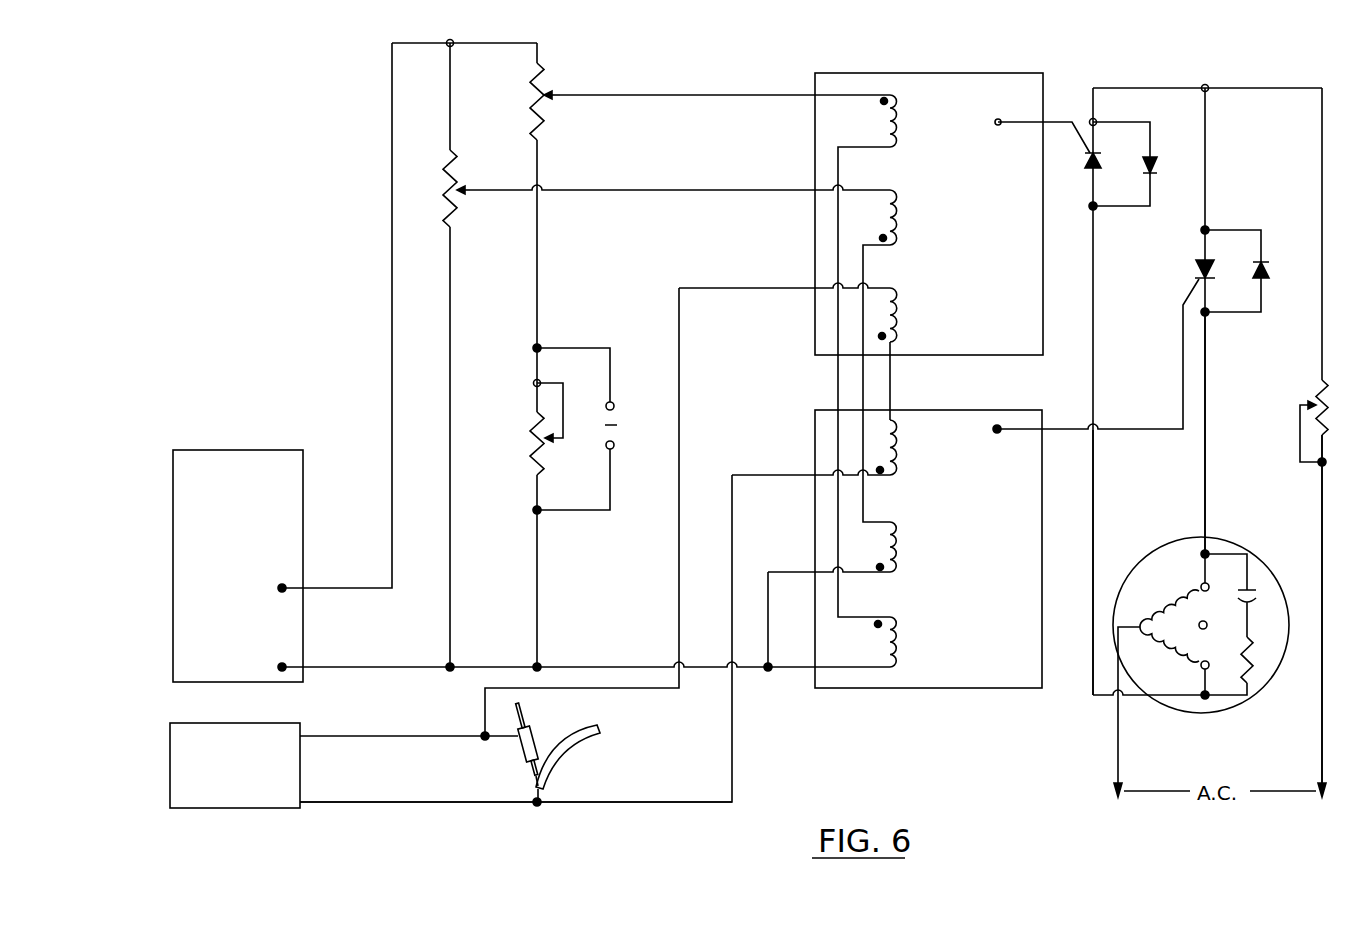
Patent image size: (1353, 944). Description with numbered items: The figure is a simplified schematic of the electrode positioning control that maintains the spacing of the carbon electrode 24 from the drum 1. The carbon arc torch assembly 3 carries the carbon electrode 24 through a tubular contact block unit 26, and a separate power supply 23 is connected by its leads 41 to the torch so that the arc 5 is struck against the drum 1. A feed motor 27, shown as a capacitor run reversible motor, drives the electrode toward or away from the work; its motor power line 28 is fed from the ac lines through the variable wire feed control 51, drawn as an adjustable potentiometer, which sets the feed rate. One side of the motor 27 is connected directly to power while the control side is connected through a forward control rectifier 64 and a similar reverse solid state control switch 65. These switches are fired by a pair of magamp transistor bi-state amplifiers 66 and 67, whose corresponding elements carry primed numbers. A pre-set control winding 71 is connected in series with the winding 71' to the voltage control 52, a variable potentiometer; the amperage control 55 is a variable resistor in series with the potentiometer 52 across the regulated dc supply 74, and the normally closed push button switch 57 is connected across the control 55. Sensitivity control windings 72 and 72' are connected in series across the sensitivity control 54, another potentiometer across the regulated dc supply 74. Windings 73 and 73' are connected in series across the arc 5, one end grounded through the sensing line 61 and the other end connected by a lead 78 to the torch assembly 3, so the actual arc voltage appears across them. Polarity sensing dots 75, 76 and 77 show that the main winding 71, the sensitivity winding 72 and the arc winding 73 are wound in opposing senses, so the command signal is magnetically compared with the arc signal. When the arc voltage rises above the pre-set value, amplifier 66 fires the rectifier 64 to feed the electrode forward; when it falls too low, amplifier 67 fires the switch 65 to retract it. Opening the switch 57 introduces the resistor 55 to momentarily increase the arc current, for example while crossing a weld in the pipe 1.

The drum 1 is at (590, 726).
The carbon arc torch assembly 3 is at (536, 721).
The arc 5 is at (534, 777).
The power supply 23 is at (262, 808).
The carbon electrode 24 is at (530, 766).
The tubular contact block unit 26 is at (520, 746).
The feed motor 27 is at (1279, 563).
The motor power line 28 is at (1093, 512).
The welding leads 41 is at (350, 800).
The variable wire feed control 51 is at (1308, 387).
The voltage control 52 is at (558, 74).
The sensitivity control 54 is at (468, 168).
The amperage control 55 is at (517, 436).
The push button switch 57 is at (620, 433).
The sensing line 61 is at (640, 802).
The forward control rectifier 64 is at (1196, 266).
The solid state control switch 65 is at (1089, 165).
The magamp transistor bi-state amplifier 66 is at (990, 410).
The magamp transistor bi-state amplifier 67 is at (1022, 73).
The pre-set control winding 71 is at (896, 645).
The pre-set control winding 71' is at (893, 347).
The sensitivity control winding 72 is at (913, 558).
The sensitivity control winding 72' is at (882, 341).
The arc sensing winding 73 is at (914, 446).
The arc sensing winding 73' is at (912, 354).
The regulated dc supply 74 is at (250, 450).
The polarity sensing dot 75 is at (875, 626).
The polarity sensing dot 76 is at (879, 564).
The polarity dot 77 is at (880, 467).
The lead 78 is at (677, 598).